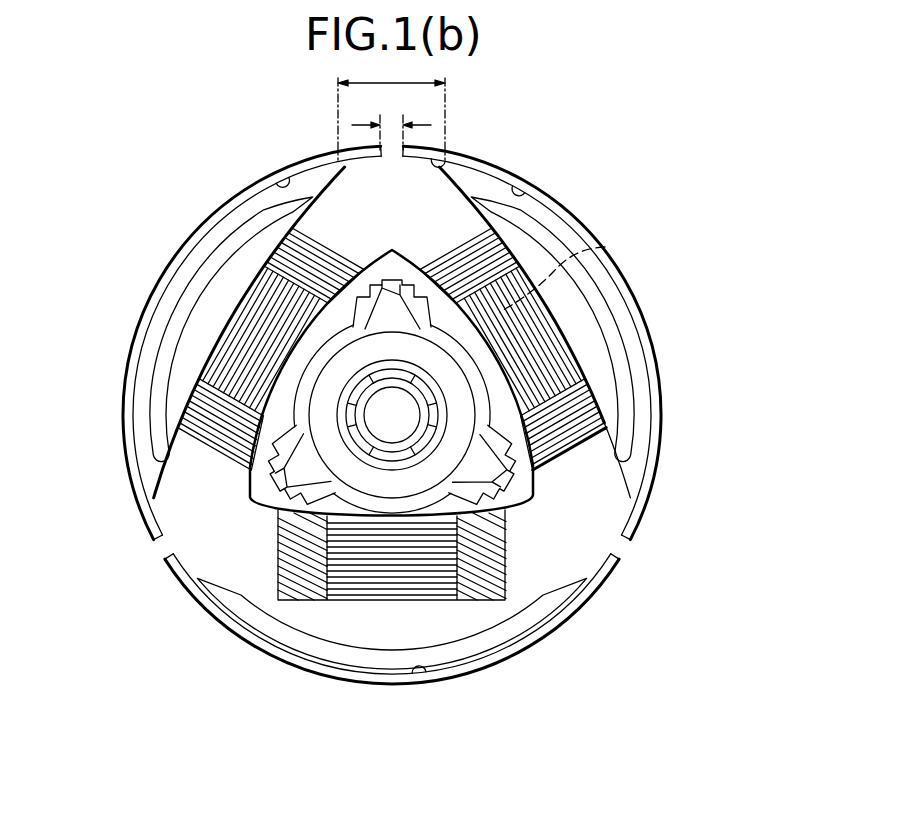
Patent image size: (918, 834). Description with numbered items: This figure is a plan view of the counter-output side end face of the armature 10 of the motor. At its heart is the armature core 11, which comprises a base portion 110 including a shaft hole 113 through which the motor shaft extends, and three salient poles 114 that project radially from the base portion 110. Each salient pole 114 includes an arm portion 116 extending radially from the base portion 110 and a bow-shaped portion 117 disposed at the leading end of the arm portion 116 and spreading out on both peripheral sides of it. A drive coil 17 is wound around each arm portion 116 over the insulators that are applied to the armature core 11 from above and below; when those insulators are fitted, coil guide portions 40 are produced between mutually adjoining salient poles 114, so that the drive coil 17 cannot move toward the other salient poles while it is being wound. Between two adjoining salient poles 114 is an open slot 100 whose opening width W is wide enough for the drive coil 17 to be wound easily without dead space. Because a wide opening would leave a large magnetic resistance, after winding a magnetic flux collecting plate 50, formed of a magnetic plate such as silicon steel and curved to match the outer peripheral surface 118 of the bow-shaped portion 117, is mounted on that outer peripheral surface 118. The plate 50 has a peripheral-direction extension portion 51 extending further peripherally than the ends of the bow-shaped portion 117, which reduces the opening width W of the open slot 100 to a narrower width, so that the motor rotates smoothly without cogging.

The armature 10 is at (672, 165).
The armature core 11 is at (636, 343).
The drive coil 17 is at (550, 438).
The coil guide portion 40 is at (303, 262).
The magnetic flux collecting plate 50 is at (232, 204).
The peripheral-direction extension portion 51 is at (447, 160).
The open slot 100 is at (333, 231).
The base portion 110 is at (534, 222).
The shaft hole 113 is at (420, 402).
The salient pole 114 is at (735, 216).
The arm portion 116 is at (605, 247).
The bow-shaped portion 117 is at (588, 262).
The outer peripheral surface 118 is at (286, 182).